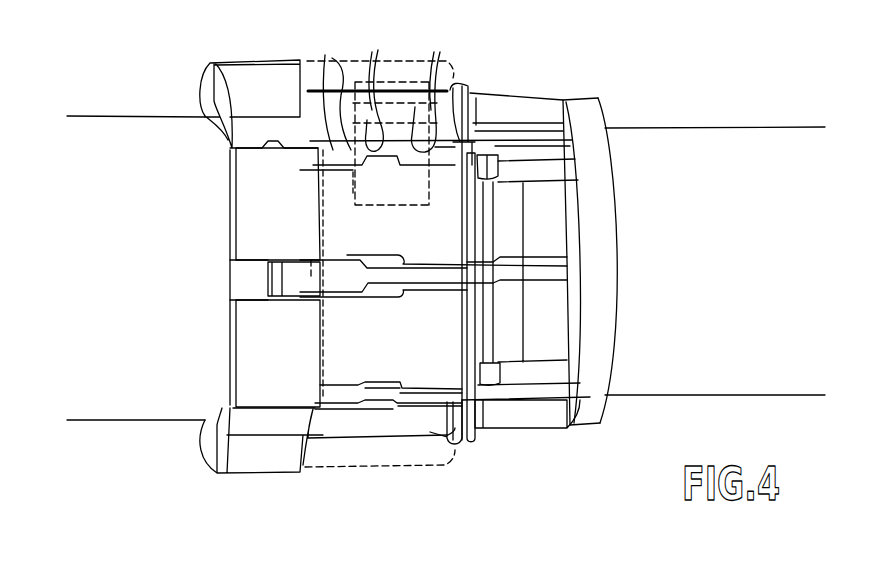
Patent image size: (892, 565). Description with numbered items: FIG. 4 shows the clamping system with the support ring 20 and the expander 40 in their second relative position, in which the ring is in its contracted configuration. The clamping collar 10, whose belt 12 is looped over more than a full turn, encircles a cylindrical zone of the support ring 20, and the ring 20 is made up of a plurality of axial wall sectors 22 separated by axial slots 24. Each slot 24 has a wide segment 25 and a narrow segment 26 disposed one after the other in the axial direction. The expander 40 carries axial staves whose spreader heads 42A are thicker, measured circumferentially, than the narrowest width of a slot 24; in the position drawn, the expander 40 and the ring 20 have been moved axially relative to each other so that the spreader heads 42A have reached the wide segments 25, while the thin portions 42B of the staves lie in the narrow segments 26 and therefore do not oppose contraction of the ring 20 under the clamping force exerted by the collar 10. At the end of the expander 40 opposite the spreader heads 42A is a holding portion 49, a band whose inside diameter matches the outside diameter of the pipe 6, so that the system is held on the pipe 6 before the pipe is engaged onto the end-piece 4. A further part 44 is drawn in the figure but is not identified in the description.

The end-piece 4 is at (117, 411).
The pipe 6 is at (722, 139).
The clamping collar 10 is at (330, 476).
The belt 12 is at (388, 458).
The support ring 20 is at (193, 61).
The axial wall sectors 22 is at (347, 232).
The axial slots 24 is at (252, 276).
The wide segment 25 is at (378, 52).
The narrow segment 26 is at (440, 55).
The expander 40 is at (611, 229).
The spreader heads 42A is at (325, 60).
The thin portions 42B is at (425, 278).
The inner ring 44 is at (528, 152).
The holding portion 49 is at (606, 235).